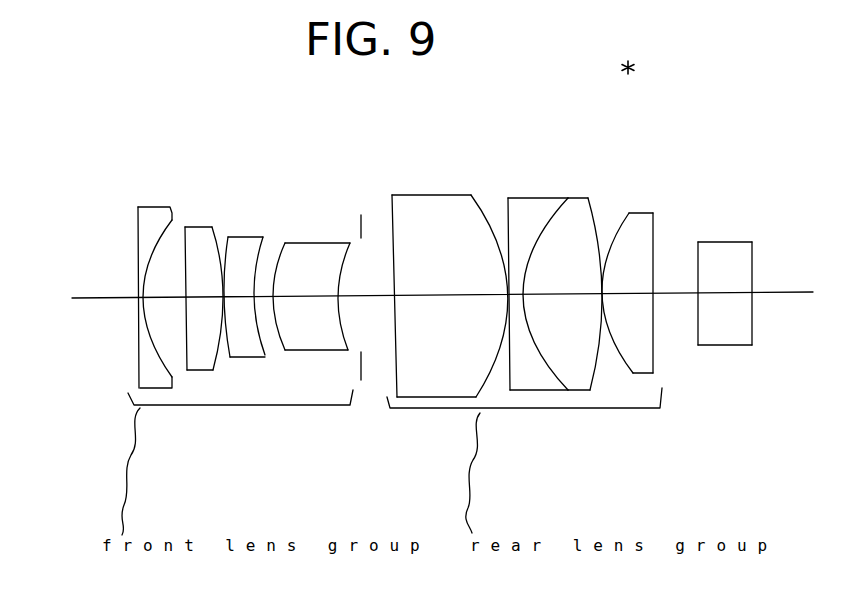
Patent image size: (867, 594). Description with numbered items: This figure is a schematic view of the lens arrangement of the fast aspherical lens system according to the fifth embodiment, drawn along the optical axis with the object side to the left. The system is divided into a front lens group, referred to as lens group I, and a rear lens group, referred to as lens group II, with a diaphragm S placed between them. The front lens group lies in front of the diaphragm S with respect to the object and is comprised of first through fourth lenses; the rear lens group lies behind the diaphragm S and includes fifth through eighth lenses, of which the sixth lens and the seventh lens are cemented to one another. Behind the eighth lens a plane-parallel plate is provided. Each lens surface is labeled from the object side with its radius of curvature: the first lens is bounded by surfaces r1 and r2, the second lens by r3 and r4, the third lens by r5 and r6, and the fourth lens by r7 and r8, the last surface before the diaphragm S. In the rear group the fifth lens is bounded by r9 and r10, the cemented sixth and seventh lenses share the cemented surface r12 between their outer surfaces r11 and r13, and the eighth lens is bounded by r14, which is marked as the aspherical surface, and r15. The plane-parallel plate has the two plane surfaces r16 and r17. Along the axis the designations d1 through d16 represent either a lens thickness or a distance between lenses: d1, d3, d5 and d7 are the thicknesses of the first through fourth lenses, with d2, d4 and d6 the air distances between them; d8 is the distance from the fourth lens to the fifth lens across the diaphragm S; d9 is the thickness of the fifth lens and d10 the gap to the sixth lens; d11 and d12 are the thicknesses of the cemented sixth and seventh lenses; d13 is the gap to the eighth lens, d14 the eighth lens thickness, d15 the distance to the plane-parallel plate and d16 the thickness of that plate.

The diaphragm S is at (366, 222).
The radius of curvature of the first lens surface r1 is at (138, 207).
The radius of curvature of the second lens surface r2 is at (171, 214).
The radius of curvature of the third lens surface r3 is at (185, 227).
The radius of curvature of the fourth lens surface r4 is at (212, 227).
The radius of curvature of the fifth lens surface r5 is at (228, 237).
The radius of curvature of the sixth lens surface r6 is at (264, 237).
The radius of curvature of the seventh lens surface r7 is at (285, 243).
The radius of curvature of the eighth lens surface r8 is at (350, 243).
The radius of curvature of the ninth lens surface r9 is at (392, 195).
The radius of curvature of the tenth lens surface r10 is at (471, 195).
The radius of curvature of the eleventh lens surface r11 is at (508, 198).
The radius of curvature of the twelfth lens surface r12 is at (568, 198).
The radius of curvature of the thirteenth lens surface r13 is at (588, 198).
The radius of curvature of the fourteenth lens surface r14 is at (629, 213).
The radius of curvature of the fifteenth lens surface r15 is at (653, 213).
The radius of curvature of the sixteenth lens surface r16 is at (698, 242).
The radius of curvature of the seventeenth lens surface r17 is at (752, 242).
The first lens thickness d1 is at (134, 345).
The distance between first and second lenses d2 is at (163, 297).
The second lens thickness d3 is at (200, 297).
The distance between second and third lenses d4 is at (223, 297).
The third lens thickness d5 is at (237, 297).
The distance between third and fourth lenses d6 is at (265, 296).
The fourth lens thickness d7 is at (307, 296).
The distance between fourth and fifth lenses d8 is at (366, 296).
The fifth lens thickness d9 is at (450, 295).
The distance between fifth and sixth lenses d10 is at (507, 295).
The sixth lens thickness d11 is at (513, 295).
The seventh lens thickness d12 is at (561, 294).
The distance between seventh and eighth lenses d13 is at (600, 294).
The eighth lens thickness d14 is at (627, 294).
The distance between eighth lens and plane-parallel plate d15 is at (675, 293).
The plane-parallel plate thickness d16 is at (722, 293).